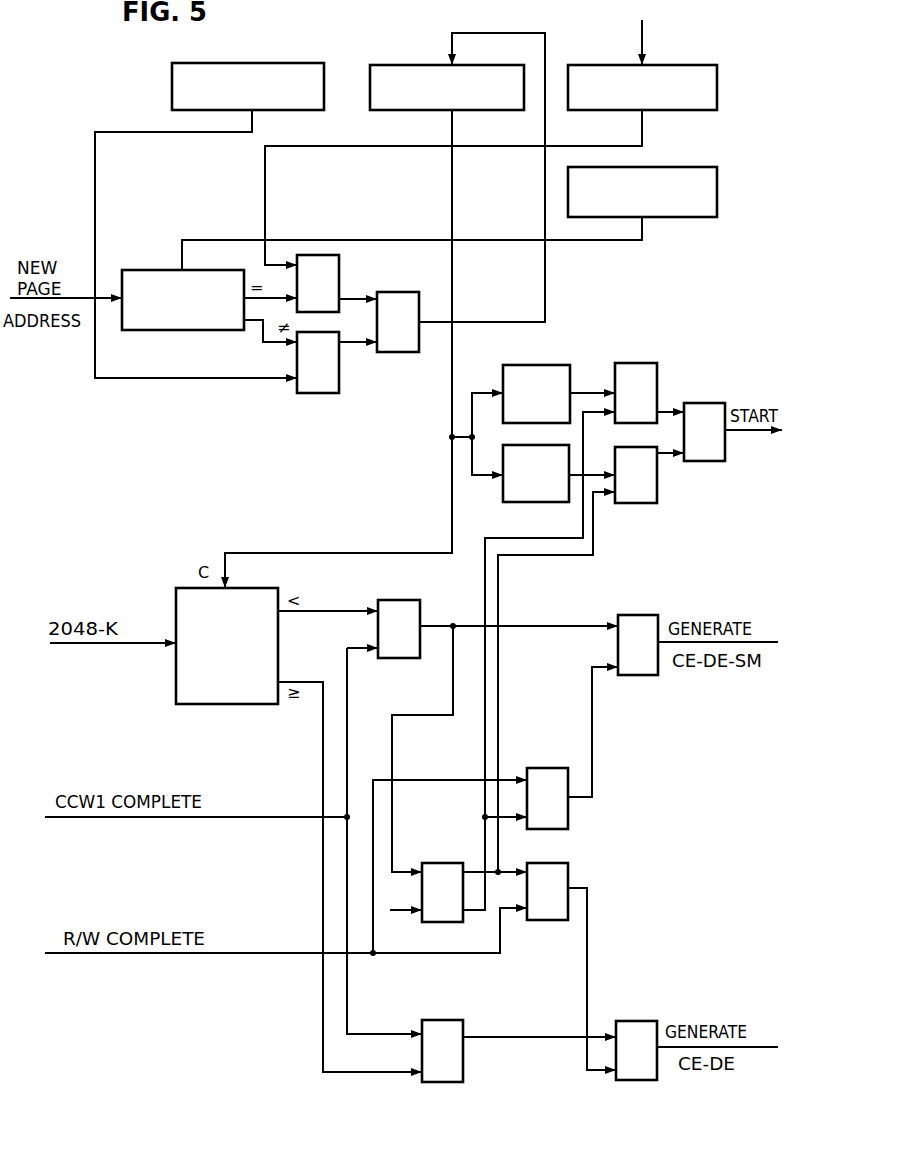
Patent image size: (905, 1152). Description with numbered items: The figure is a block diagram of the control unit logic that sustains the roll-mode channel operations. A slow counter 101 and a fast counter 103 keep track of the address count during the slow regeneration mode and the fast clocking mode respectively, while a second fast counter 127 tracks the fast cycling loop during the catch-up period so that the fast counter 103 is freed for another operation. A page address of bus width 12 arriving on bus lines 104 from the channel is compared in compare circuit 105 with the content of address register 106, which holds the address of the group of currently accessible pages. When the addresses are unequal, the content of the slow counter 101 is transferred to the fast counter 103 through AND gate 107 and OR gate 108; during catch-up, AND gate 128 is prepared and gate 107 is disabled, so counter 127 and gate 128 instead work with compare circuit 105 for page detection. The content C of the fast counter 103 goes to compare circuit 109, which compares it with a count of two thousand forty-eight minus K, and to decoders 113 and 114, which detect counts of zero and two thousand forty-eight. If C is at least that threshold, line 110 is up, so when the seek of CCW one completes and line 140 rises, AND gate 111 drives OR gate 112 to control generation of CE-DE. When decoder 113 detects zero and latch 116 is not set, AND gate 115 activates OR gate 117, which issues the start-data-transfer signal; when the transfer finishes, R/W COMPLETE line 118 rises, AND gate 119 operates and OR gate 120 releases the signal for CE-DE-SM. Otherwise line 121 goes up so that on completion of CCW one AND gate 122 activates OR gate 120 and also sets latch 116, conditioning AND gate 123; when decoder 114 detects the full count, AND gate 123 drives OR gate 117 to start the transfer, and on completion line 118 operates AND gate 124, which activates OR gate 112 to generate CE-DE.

The slow counter 101 is at (276, 63).
The fast counter 103 is at (394, 65).
The second fast counter 127 is at (694, 65).
The address register 106 is at (690, 212).
The compare circuit 105 is at (149, 270).
The bus lines 104 is at (72, 297).
The AND gate 128 is at (339, 266).
The AND gate 107 is at (325, 393).
The OR gate 108 is at (405, 352).
The decoder 113 is at (528, 365).
The decoder 114 is at (545, 502).
The AND gate 115 is at (642, 363).
The AND gate 123 is at (651, 503).
The OR gate 117 is at (704, 403).
The compare circuit 109 is at (176, 601).
The line 121 is at (330, 611).
The AND gate 122 is at (397, 602).
The line 110 is at (323, 738).
The OR gate 120 is at (650, 615).
The AND gate 119 is at (550, 768).
The latch 116 is at (444, 863).
The AND gate 124 is at (568, 863).
The AND gate 111 is at (442, 1026).
The OR gate 112 is at (627, 1021).
The CCW 1 complete line 140 is at (283, 817).
The R/W COMPLETE line 118 is at (277, 953).
The 12-bit bus 12 is at (132, 644).